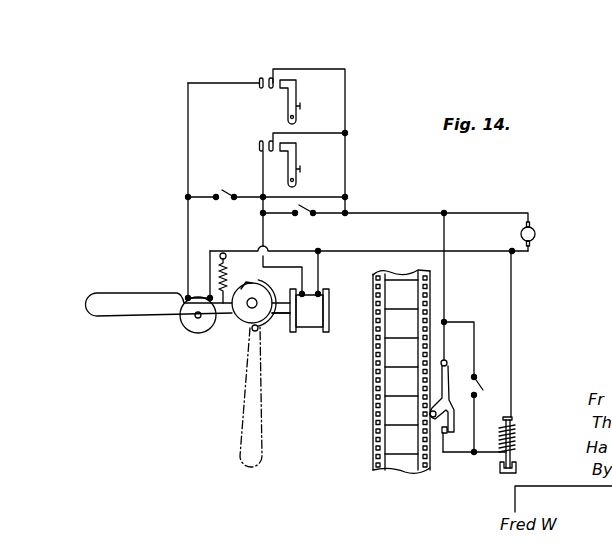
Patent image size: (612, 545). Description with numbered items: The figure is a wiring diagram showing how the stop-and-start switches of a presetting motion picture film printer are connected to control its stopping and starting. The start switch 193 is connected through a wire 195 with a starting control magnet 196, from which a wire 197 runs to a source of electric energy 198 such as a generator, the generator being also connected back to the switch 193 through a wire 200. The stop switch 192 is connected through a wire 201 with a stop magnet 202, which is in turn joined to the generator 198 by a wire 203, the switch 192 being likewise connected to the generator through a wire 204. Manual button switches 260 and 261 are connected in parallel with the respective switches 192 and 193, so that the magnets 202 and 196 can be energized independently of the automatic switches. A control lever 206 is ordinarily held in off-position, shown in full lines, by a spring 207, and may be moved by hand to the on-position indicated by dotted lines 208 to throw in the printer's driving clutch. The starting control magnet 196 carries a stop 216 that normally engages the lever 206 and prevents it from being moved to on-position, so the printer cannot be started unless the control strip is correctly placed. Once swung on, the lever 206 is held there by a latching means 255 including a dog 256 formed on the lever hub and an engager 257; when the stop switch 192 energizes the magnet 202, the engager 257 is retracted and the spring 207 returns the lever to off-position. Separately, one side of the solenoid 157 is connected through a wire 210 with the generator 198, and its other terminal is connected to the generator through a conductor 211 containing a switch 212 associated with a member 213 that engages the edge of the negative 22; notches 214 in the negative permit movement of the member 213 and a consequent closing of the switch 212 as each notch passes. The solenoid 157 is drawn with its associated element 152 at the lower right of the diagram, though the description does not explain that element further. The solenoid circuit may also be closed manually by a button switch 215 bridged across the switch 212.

The start switch 193 is at (268, 78).
The stop switch 192 is at (270, 140).
The wire 204 is at (338, 132).
The wire 200 is at (345, 173).
The wire 195 is at (188, 138).
The wire 201 is at (262, 223).
The button switch 261 is at (222, 191).
The button switch 260 is at (305, 214).
The source of electric energy 198 is at (536, 232).
The wire 197 is at (404, 251).
The wire 210 is at (512, 322).
The notch 214 is at (432, 310).
The conductor 211 is at (446, 307).
The button switch 215 is at (483, 388).
The switch 212 is at (447, 437).
The solenoid 157 is at (510, 428).
The contact 152 is at (512, 455).
The negative 22 is at (371, 373).
The member 213 is at (427, 413).
The stop magnet 202 is at (325, 304).
The latching means 255 is at (284, 290).
The wire 203 is at (322, 283).
The engager 257 is at (285, 320).
The control lever 206 is at (128, 292).
The starting control magnet 196 is at (187, 323).
The stop 216 is at (198, 320).
The spring 207 is at (220, 274).
The dog 256 is at (250, 328).
The on-position 208 is at (242, 410).